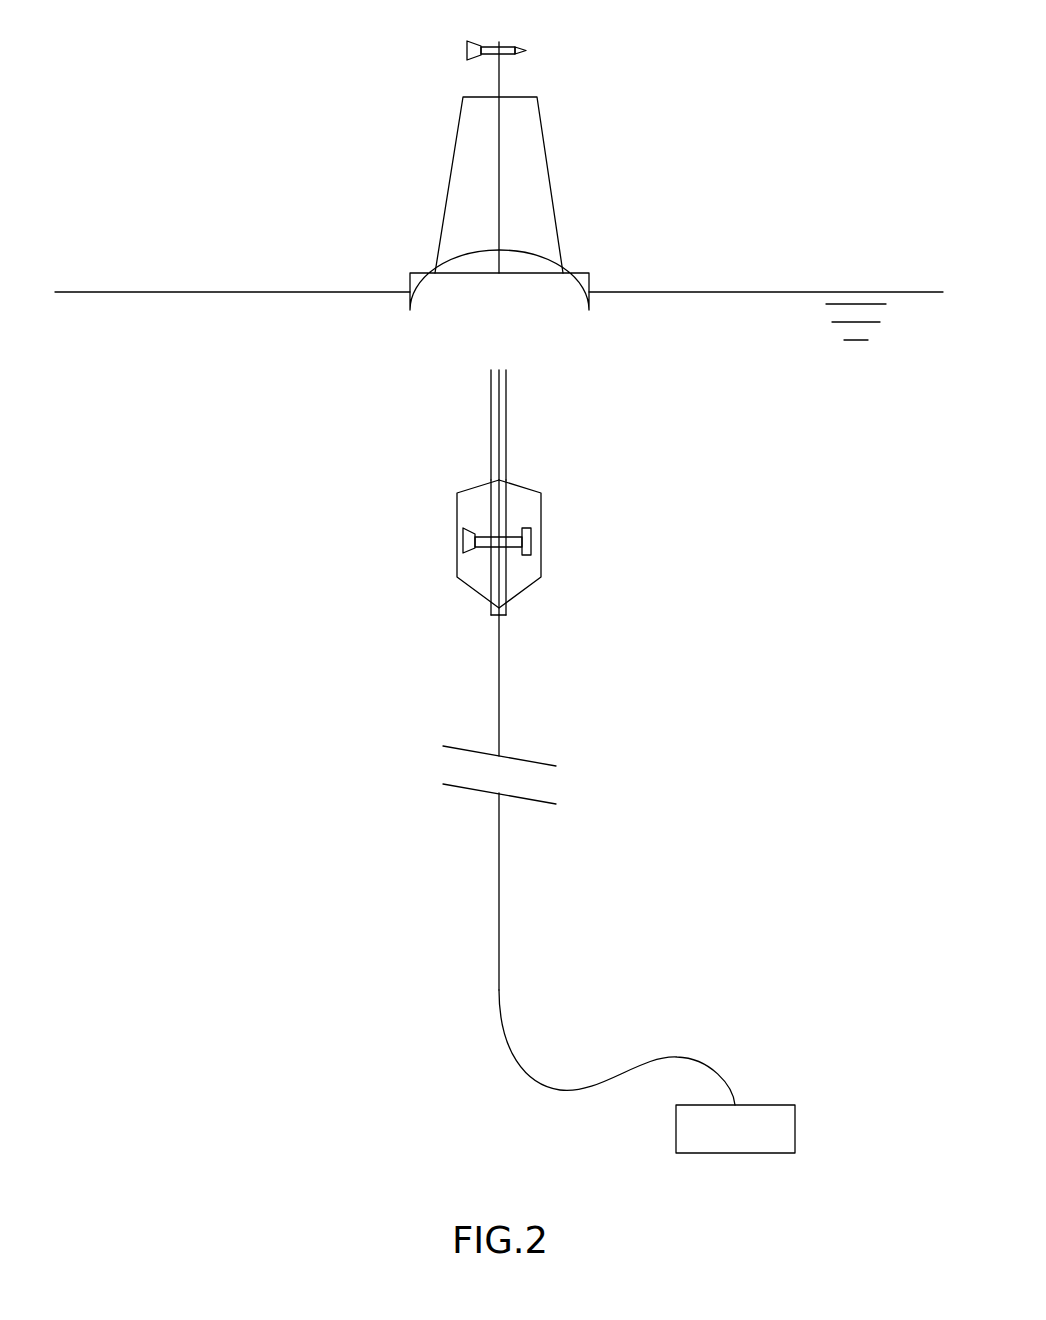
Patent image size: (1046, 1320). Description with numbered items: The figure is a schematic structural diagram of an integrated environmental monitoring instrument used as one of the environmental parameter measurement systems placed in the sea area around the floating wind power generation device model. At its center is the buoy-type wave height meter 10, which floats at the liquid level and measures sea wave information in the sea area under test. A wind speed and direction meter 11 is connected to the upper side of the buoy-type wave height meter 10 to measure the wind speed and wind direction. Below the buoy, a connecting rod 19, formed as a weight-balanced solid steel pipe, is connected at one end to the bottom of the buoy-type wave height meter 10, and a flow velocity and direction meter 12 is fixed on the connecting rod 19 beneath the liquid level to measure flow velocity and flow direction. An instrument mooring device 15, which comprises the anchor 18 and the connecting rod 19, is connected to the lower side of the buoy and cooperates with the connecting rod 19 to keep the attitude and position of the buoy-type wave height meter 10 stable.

The buoy-type wave height meter 10 is at (557, 203).
The wind speed and direction meter 11 is at (544, 139).
The flow velocity and direction meter 12 is at (548, 547).
The instrument mooring device 15 is at (589, 860).
The anchor 18 is at (806, 1014).
The connecting rod 19 is at (616, 426).